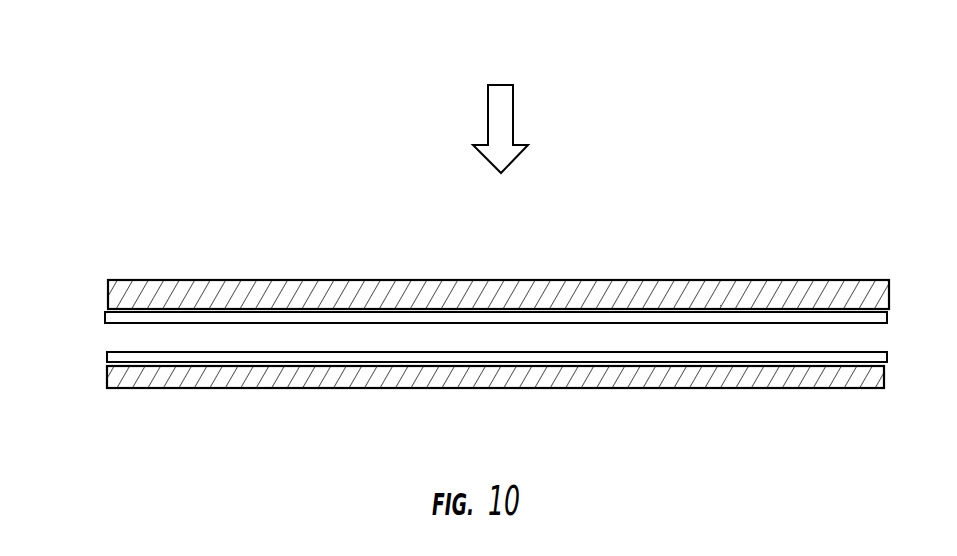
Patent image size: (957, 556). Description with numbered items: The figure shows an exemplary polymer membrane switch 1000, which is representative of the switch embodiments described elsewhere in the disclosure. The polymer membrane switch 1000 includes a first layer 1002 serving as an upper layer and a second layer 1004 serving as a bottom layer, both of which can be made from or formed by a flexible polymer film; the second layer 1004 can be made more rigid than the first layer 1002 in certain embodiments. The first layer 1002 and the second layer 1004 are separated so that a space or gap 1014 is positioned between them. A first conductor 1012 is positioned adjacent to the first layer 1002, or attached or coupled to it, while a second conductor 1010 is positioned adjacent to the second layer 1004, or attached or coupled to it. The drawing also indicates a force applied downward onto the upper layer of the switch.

The polymer membrane switch 1000 is at (586, 51).
The first layer 1002 is at (173, 293).
The first conductor 1012 is at (101, 302).
The second conductor 1010 is at (138, 356).
The gap 1014 is at (273, 338).
The second layer 1004 is at (803, 394).